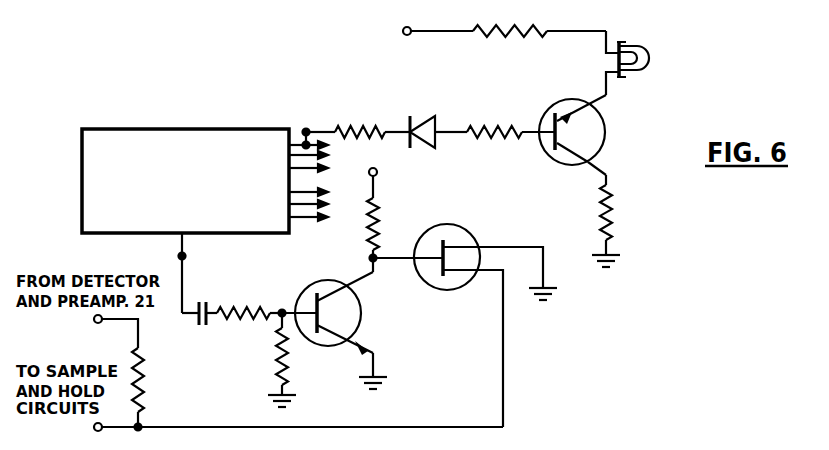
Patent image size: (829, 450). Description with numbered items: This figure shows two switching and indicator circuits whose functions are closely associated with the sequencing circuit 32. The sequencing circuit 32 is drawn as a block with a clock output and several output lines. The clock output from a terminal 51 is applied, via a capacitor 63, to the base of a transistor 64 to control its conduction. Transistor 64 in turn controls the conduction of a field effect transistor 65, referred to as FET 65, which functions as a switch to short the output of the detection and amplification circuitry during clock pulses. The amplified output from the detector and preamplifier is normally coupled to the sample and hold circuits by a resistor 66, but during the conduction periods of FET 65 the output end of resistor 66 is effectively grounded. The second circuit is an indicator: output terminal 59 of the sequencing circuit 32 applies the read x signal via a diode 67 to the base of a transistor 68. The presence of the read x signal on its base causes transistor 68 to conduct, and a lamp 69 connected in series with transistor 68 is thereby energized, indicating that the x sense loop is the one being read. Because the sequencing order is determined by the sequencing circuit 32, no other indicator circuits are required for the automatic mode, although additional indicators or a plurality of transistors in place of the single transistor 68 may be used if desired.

The sequencing circuit 32 is at (182, 128).
The output terminal 59 is at (306, 131).
The diode 67 is at (421, 119).
The transistor 68 is at (606, 128).
The lamp 69 is at (649, 51).
The field effect transistor 65 is at (466, 231).
The transistor 64 is at (362, 308).
The terminal 51 is at (184, 256).
The capacitor 63 is at (206, 326).
The resistor 66 is at (142, 374).